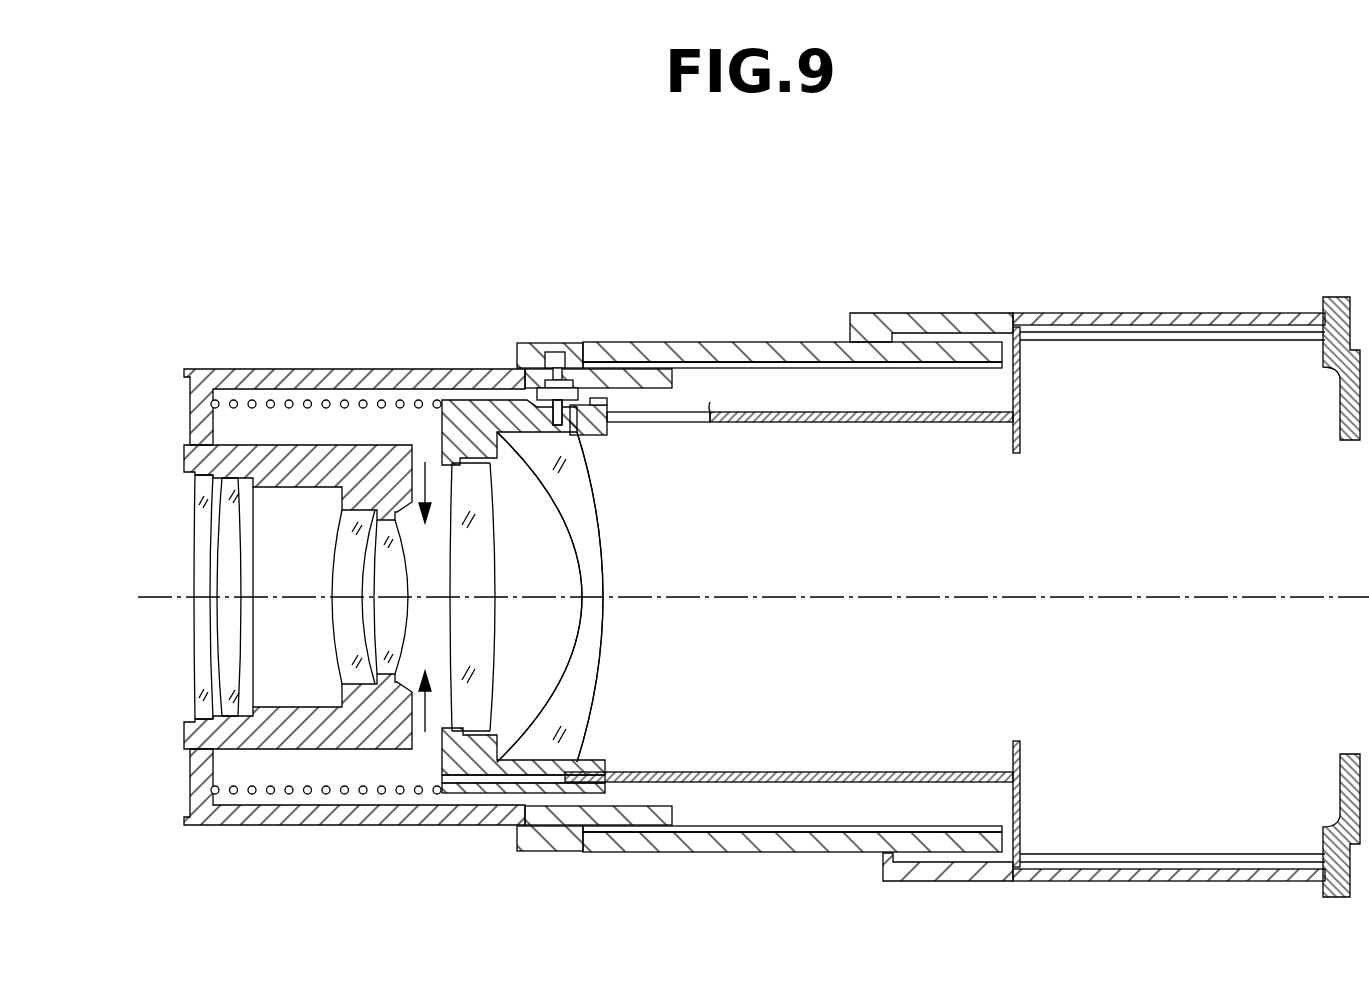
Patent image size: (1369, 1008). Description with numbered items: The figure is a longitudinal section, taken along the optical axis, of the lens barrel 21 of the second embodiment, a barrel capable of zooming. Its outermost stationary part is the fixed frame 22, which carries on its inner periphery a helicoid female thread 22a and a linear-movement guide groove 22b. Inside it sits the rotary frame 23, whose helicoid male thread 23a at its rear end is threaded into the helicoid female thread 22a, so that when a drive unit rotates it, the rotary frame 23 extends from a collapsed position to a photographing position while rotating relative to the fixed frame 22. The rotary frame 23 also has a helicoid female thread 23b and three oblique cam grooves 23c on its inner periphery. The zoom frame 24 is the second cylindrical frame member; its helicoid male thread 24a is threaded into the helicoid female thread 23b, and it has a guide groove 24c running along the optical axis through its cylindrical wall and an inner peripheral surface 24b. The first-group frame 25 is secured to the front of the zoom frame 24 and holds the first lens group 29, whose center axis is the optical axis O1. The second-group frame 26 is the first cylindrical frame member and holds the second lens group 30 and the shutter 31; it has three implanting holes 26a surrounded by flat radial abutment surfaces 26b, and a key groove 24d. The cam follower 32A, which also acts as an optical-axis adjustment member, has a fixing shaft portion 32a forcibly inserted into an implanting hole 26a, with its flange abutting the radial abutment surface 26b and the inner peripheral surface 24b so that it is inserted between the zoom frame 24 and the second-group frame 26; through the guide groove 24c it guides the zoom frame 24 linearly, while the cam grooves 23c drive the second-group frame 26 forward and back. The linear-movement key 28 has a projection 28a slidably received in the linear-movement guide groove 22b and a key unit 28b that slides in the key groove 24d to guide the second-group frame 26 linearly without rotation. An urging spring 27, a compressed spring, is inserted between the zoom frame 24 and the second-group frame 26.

The lens barrel 21 is at (1163, 250).
The fixed frame 22 is at (1277, 312).
The helicoid female thread 22a is at (1222, 341).
The linear-movement guide groove 22b is at (1087, 321).
The rotary frame 23 is at (723, 342).
The helicoid male thread 23a is at (915, 313).
The helicoid female thread 23b is at (792, 361).
The cam grooves 23c is at (517, 350).
The zoom frame 24 is at (318, 369).
The helicoid male thread 24a is at (643, 362).
The inner peripheral surface 24b is at (668, 390).
The guide groove 24c is at (640, 378).
The key groove 24d is at (540, 775).
The first-group frame 25 is at (223, 457).
The second-group frame 26 is at (455, 427).
The implanting holes 26a is at (605, 407).
The radial abutment surfaces 26b is at (608, 412).
The urging spring 27 is at (255, 401).
The linear-movement key 28 is at (1022, 365).
The projection 28a is at (1022, 333).
The key unit 28b is at (946, 422).
The first lens group 29 is at (375, 618).
The second lens group 30 is at (487, 612).
The shutter 31 is at (500, 728).
The cam follower 32A is at (560, 362).
The fixing shaft portion 32a is at (655, 490).
The optical axis O1 is at (158, 596).